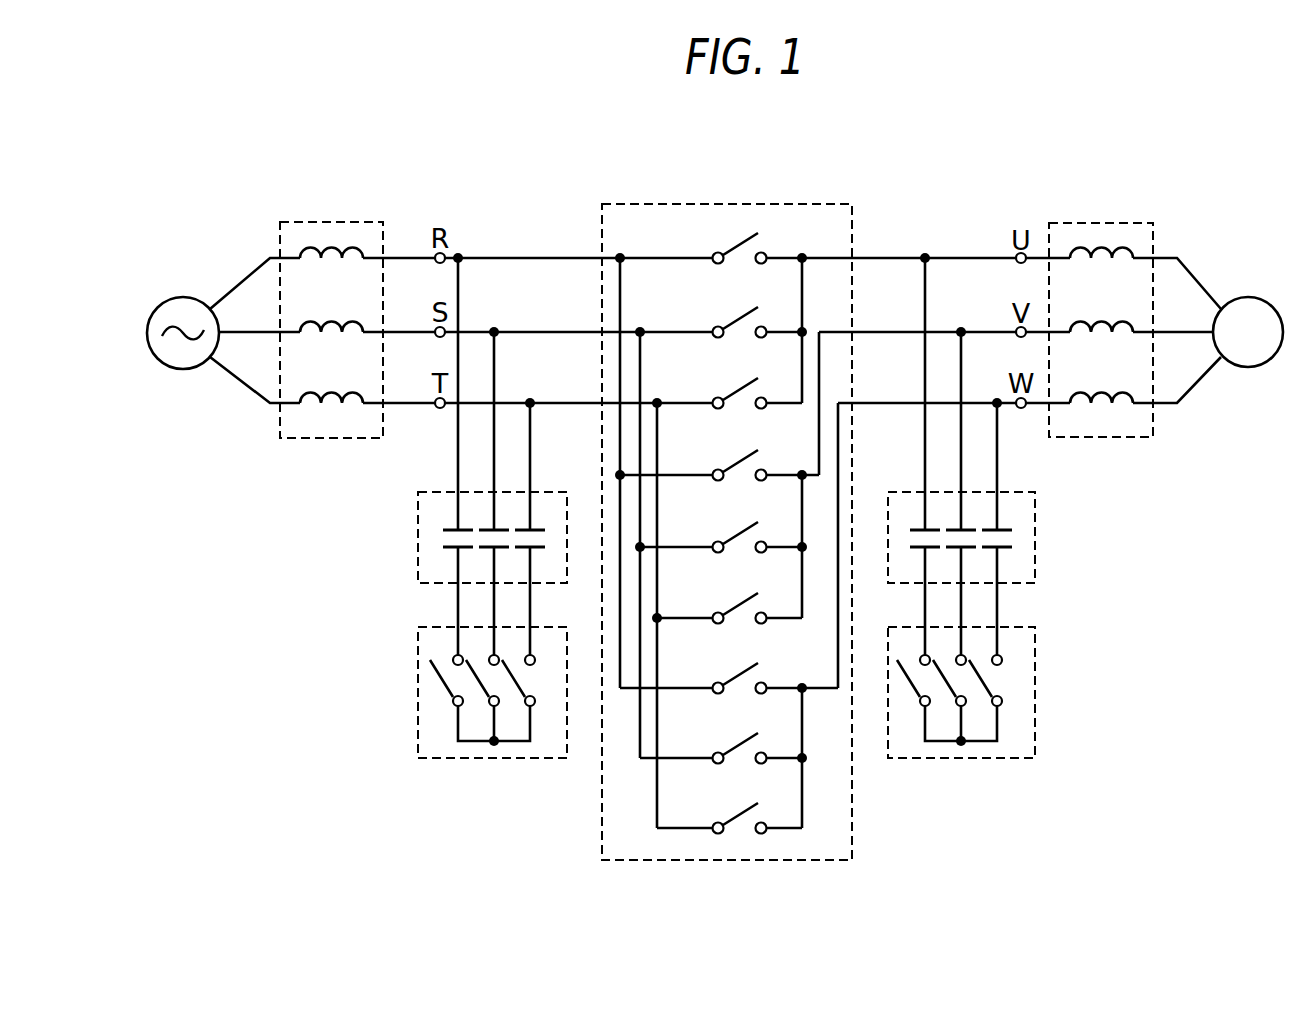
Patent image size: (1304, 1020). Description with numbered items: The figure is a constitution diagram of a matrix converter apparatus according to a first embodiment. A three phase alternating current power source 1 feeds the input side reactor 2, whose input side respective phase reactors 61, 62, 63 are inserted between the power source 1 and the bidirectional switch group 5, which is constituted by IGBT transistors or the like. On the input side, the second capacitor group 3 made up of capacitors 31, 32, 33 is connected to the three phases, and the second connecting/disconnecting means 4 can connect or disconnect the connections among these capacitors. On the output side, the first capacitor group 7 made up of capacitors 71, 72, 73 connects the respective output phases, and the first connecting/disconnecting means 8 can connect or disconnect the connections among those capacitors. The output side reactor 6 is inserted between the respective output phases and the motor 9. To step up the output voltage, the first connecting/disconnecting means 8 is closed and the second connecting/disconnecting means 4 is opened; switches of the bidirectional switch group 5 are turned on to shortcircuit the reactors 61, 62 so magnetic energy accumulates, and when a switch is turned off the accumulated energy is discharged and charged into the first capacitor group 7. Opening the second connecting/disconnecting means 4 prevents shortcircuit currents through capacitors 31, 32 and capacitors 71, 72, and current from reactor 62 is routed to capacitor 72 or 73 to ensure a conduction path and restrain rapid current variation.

The three phase alternating current power source 1 is at (183, 370).
The input side reactor 2 is at (352, 300).
The input side respective phase reactor 61 is at (362, 250).
The input side respective phase reactor 62 is at (362, 323).
The input side respective phase reactor 63 is at (362, 395).
The second capacitor group 3 is at (464, 511).
The capacitor 31 is at (467, 528).
The capacitor 32 is at (503, 528).
The capacitor 33 is at (538, 528).
The second connecting/disconnecting means 4 is at (418, 700).
The bidirectional switch group 5 is at (716, 203).
The output side reactor 6 is at (1100, 222).
The first capacitor group 7 is at (989, 511).
The capacitor 71 is at (932, 528).
The capacitor 72 is at (968, 528).
The capacitor 73 is at (1004, 528).
The first connecting/disconnecting means 8 is at (1035, 675).
The motor 9 is at (1246, 367).